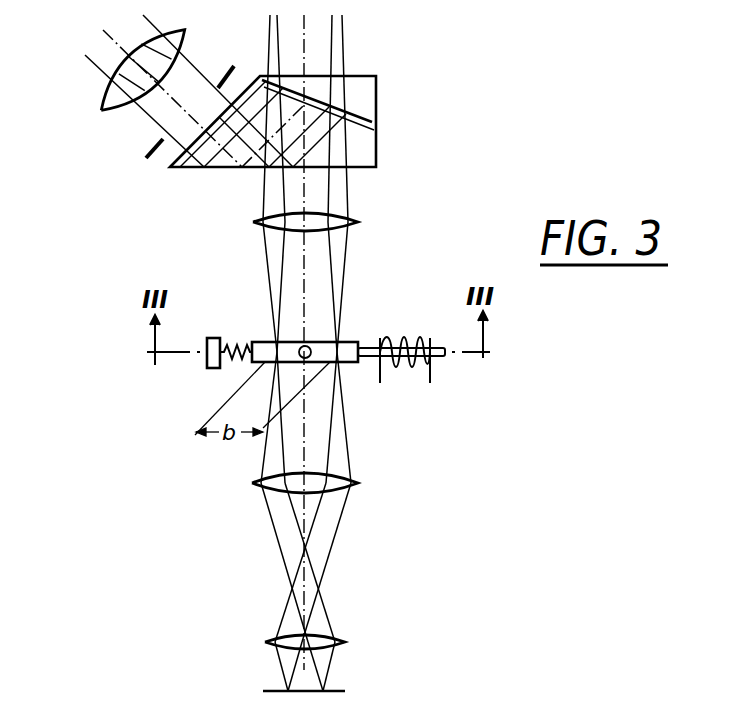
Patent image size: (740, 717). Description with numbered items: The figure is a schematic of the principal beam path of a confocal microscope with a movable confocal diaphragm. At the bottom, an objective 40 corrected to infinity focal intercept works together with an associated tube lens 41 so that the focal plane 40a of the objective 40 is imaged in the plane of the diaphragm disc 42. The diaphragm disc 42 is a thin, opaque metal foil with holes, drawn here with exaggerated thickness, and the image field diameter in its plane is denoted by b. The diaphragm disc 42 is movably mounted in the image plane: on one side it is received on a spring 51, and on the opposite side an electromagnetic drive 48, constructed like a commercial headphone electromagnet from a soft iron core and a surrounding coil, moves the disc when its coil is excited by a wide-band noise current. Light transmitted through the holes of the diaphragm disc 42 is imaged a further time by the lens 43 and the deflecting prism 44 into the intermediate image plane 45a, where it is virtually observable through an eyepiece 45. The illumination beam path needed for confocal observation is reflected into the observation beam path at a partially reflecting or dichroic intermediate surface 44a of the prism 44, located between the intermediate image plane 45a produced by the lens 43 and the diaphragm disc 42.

The objective 40 is at (345, 640).
The focal plane of the objective 40a is at (340, 689).
The tube lens 41 is at (358, 483).
The diaphragm disc 42 is at (350, 342).
The lens 43 is at (358, 222).
The deflecting prism 44 is at (377, 150).
The intermediate surface of the prism 44a is at (372, 120).
The eyepiece 45 is at (102, 112).
The intermediate image plane 45a is at (150, 162).
The electromagnetic drive 48 is at (420, 338).
The spring 51 is at (226, 340).